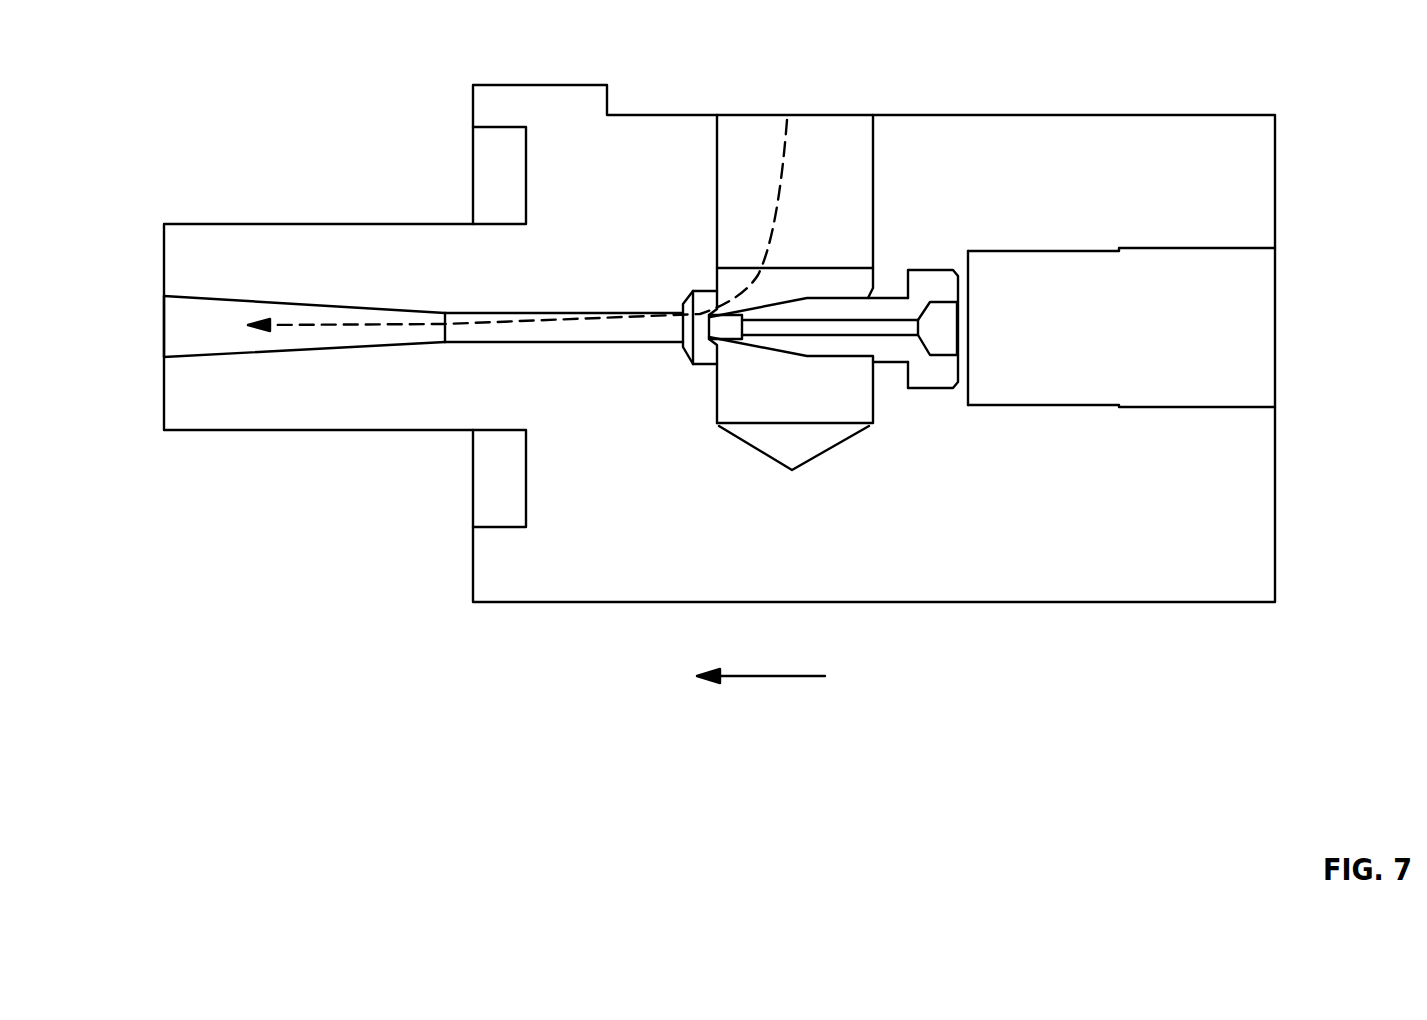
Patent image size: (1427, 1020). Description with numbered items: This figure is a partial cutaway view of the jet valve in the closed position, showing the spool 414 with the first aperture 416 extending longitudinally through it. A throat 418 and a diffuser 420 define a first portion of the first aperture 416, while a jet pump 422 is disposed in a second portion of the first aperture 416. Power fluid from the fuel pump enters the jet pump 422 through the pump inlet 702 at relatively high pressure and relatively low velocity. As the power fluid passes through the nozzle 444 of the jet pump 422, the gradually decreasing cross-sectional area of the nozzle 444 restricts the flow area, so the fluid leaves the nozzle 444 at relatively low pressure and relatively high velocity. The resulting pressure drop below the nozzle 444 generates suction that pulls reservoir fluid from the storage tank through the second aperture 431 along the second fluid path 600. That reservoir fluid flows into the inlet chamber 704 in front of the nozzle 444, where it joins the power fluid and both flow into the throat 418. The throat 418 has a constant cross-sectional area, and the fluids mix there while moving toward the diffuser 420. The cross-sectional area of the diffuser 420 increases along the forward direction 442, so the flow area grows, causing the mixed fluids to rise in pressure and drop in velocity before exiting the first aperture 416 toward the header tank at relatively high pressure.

The spool 414 is at (1015, 115).
The first aperture 416 is at (163, 340).
The throat 418 is at (493, 310).
The diffuser 420 is at (275, 302).
The jet pump 422 is at (837, 358).
The second aperture 431 is at (815, 113).
The forward direction 442 is at (780, 673).
The nozzle 444 is at (692, 352).
The second fluid path 600 is at (778, 207).
The pump inlet 702 is at (1275, 317).
The inlet chamber 704 is at (704, 366).